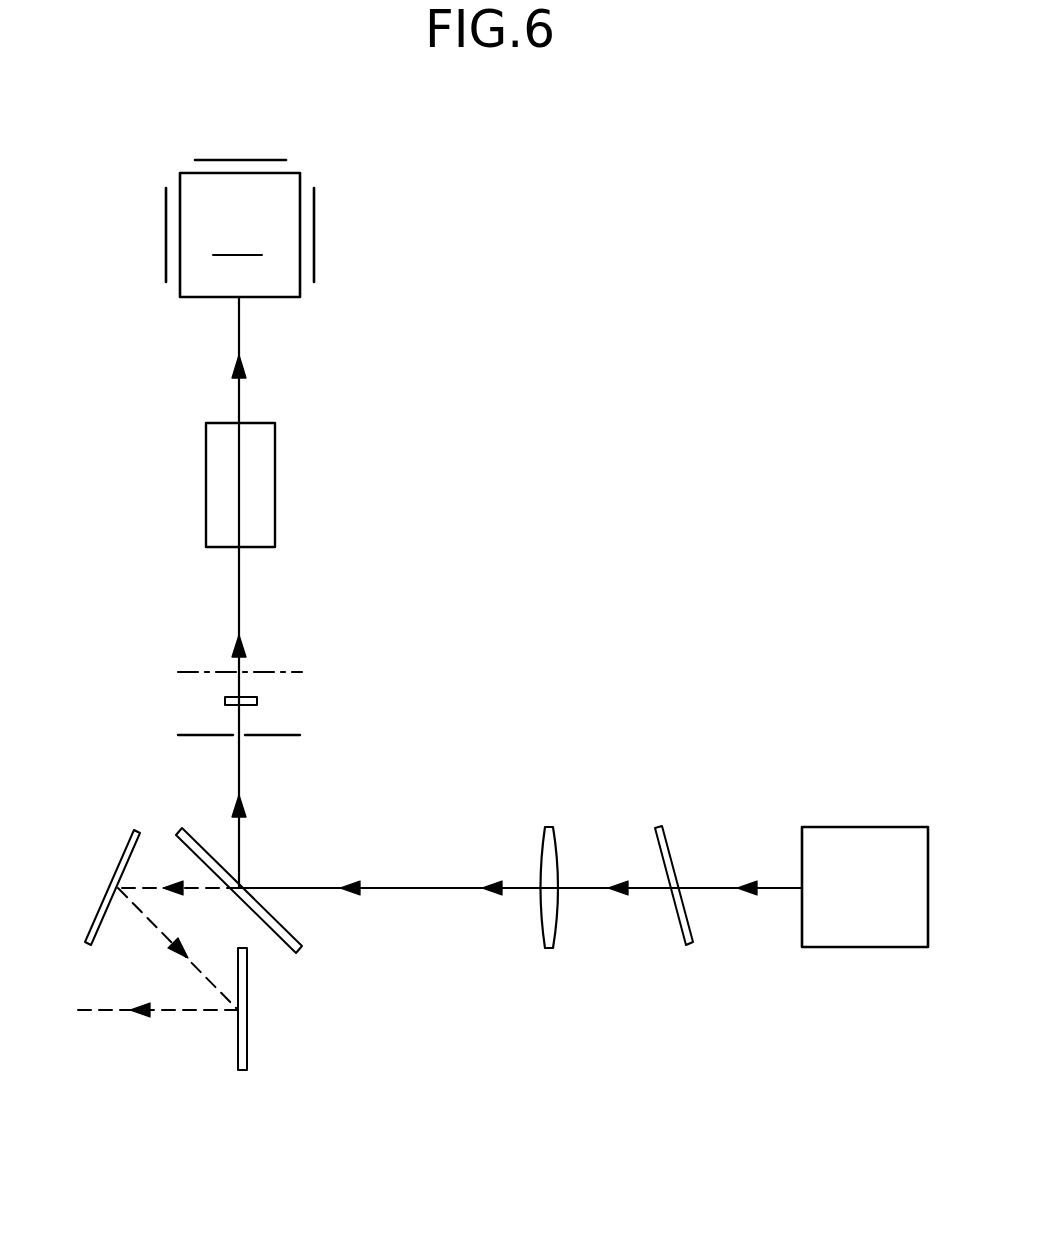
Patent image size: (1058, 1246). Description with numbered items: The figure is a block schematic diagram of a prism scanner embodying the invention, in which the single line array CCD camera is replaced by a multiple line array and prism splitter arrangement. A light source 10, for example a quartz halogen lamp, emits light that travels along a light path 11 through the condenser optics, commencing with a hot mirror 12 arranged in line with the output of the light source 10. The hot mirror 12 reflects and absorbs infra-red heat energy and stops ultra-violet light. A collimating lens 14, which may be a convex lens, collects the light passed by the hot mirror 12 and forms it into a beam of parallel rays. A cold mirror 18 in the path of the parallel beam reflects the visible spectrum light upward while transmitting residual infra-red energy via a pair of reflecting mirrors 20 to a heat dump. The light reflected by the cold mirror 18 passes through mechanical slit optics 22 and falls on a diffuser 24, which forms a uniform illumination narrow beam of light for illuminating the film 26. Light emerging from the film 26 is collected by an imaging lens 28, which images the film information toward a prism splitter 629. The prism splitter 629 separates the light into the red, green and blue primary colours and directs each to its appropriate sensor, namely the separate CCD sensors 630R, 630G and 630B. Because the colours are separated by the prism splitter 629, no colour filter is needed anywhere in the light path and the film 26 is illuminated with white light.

The light source 10 is at (858, 947).
The light path 11 is at (586, 892).
The hot mirror 12 is at (691, 945).
The collimating lens 14 is at (543, 942).
The cold mirror 18 is at (300, 945).
The reflecting mirrors 20 is at (120, 856).
The mechanical slit optics 22 is at (300, 735).
The diffuser 24 is at (257, 700).
The film 26 is at (282, 672).
The imaging lens 28 is at (275, 497).
The prism splitter 629 is at (241, 207).
The green CCD sensor 630G is at (200, 160).
The blue CCD sensor 630B is at (166, 206).
The red CCD sensor 630R is at (314, 206).